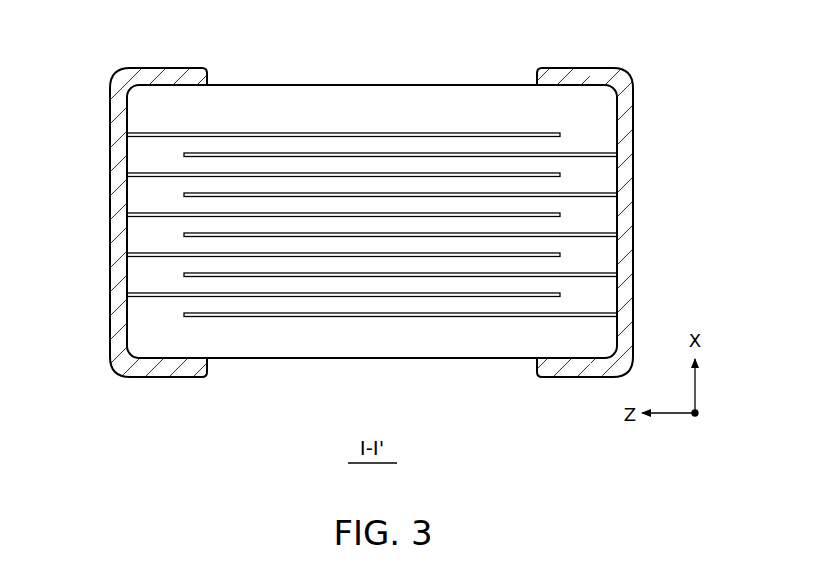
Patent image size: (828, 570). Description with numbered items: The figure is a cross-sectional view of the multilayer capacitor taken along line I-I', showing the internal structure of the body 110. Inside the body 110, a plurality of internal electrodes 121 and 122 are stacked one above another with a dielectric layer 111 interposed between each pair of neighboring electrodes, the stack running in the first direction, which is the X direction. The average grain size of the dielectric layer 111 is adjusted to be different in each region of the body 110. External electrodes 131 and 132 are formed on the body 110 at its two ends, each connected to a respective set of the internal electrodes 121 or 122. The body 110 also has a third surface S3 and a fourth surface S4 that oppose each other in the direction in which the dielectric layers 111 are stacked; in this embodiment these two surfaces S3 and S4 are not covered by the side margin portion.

The body 110 is at (300, 83).
The dielectric layer 111 is at (190, 163).
The internal electrode 121 is at (352, 132).
The internal electrode 122 is at (410, 152).
The external electrode 131 is at (160, 78).
The external electrode 132 is at (580, 78).
The third surface S3 is at (474, 84).
The fourth surface S4 is at (477, 360).